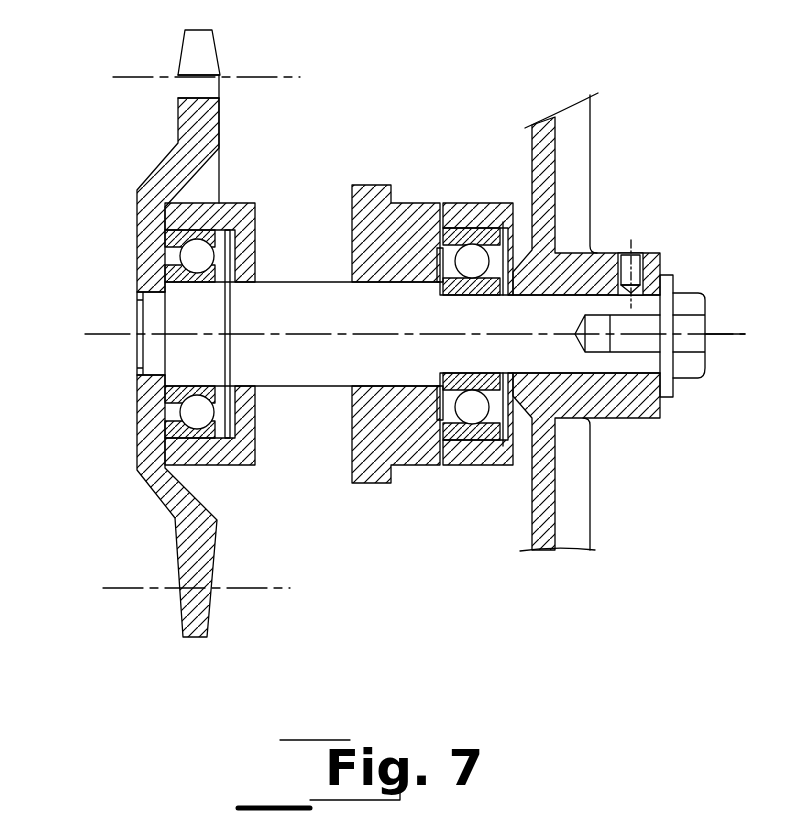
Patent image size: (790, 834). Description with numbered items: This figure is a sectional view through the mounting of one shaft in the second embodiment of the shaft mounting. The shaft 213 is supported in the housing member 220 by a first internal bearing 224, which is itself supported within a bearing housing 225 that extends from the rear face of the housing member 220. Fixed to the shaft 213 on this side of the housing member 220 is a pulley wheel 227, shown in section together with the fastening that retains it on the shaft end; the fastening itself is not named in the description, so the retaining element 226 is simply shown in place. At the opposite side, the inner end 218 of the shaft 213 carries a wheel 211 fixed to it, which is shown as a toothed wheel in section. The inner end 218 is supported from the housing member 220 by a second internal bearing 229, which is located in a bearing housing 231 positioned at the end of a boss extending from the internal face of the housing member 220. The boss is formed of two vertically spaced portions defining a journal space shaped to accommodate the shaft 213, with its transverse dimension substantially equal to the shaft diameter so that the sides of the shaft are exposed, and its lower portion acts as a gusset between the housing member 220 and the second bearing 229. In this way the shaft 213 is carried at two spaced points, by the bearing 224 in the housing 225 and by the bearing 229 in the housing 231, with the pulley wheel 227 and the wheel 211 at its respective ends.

The wheel 211 is at (178, 143).
The shaft 213 is at (300, 285).
The inner end 218 is at (152, 352).
The housing member 220 is at (365, 487).
The first internal bearing 224 is at (472, 258).
The bearing housing 225 is at (418, 203).
The bolt 226 is at (640, 360).
The pulley wheel 227 is at (607, 407).
The internal bearing 229 is at (200, 250).
The bearing housing 231 is at (236, 450).